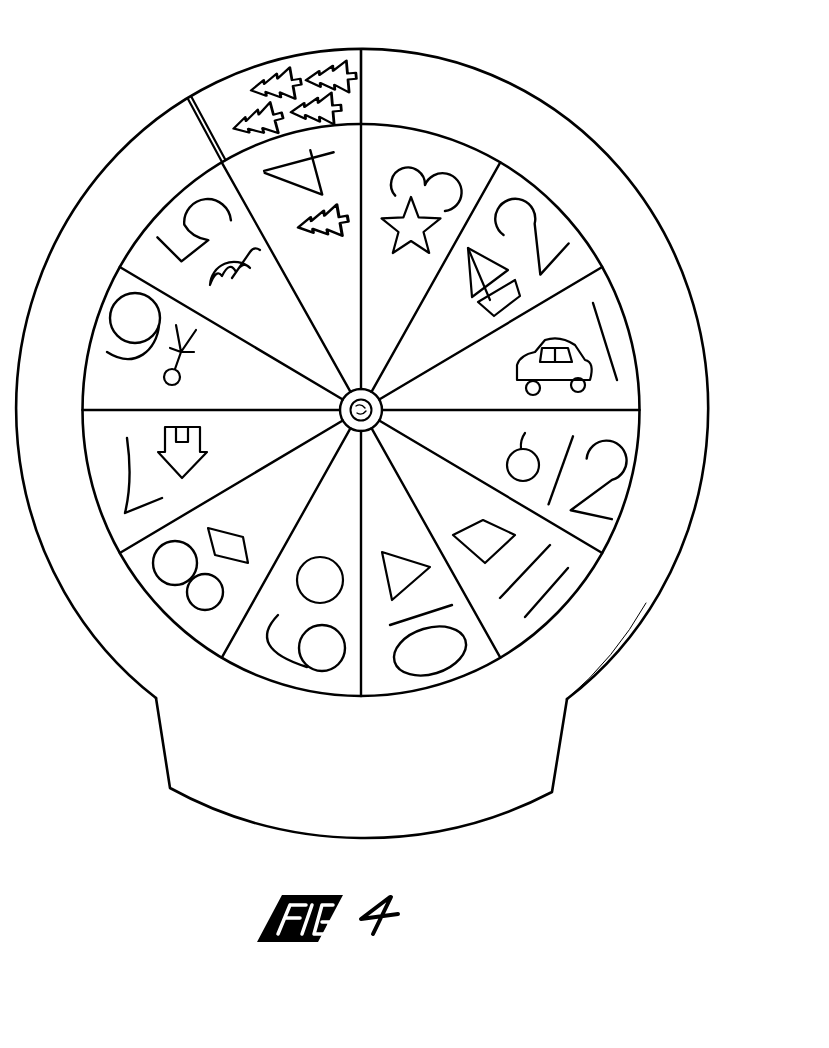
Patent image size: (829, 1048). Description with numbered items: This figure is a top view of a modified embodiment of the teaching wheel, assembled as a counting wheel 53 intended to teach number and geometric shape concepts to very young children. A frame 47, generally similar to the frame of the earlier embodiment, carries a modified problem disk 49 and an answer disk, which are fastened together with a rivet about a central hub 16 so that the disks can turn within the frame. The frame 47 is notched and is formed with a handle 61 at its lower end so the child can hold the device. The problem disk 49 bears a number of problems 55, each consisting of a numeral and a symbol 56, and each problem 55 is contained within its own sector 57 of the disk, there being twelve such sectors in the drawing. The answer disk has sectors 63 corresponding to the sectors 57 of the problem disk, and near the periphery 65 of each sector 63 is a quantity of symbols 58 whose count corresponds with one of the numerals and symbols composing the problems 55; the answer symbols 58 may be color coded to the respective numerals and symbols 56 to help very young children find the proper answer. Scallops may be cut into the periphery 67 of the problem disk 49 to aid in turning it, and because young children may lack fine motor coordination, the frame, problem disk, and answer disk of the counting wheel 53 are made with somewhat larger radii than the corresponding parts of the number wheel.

The central hub / axle 16 is at (345, 423).
The frame 47 is at (362, 423).
The problem disk 49 is at (560, 194).
The counting wheel 53 is at (558, 76).
The problems 55 is at (573, 262).
The symbol 56 is at (472, 286).
The sector 57 is at (402, 302).
The symbols 58 is at (326, 62).
The handle 61 is at (548, 735).
The sectors 63 is at (304, 76).
The periphery 65 is at (245, 73).
The periphery 67 is at (574, 627).